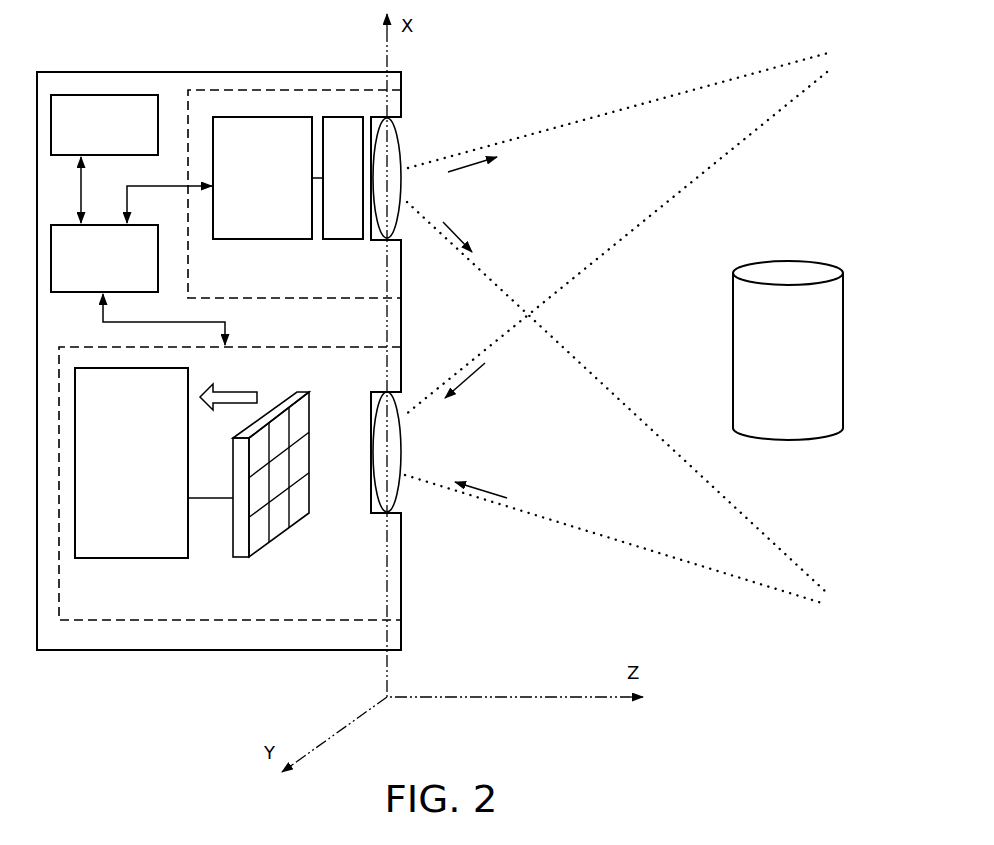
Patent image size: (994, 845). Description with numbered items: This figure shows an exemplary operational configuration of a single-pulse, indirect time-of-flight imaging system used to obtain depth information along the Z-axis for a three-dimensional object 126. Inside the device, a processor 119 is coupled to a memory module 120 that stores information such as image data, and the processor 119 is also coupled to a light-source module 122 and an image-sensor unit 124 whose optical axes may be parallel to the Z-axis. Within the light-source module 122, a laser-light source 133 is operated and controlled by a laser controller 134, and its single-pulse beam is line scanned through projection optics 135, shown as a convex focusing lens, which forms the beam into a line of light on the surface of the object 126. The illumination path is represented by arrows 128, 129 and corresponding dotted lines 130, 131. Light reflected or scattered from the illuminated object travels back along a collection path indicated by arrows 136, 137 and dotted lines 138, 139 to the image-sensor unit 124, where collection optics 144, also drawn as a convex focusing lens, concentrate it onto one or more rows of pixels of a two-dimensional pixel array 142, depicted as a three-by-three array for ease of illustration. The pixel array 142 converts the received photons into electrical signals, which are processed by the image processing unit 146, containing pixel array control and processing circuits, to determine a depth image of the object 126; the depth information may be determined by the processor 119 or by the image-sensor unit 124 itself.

The processor 119 is at (104, 258).
The memory module 120 is at (104, 125).
The light-source module 122 is at (294, 194).
The image-sensor unit 124 is at (230, 483).
The 3D object 126 is at (788, 350).
The arrow 128 is at (468, 167).
The arrow 129 is at (460, 235).
The dotted line 130 is at (625, 110).
The dotted line 131 is at (640, 418).
The laser-light source 133 is at (343, 178).
The laser controller 134 is at (262, 178).
The projection optics 135 is at (399, 151).
The arrow 136 is at (467, 383).
The arrow 137 is at (480, 488).
The dotted line 138 is at (613, 245).
The dotted line 139 is at (610, 540).
The 2D pixel array 142 is at (280, 517).
The collection optics 144 is at (398, 493).
The image processing unit 146 is at (131, 463).